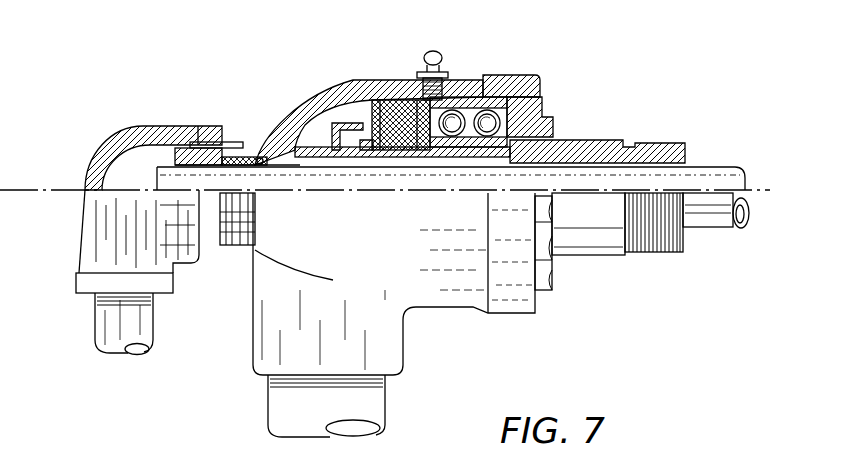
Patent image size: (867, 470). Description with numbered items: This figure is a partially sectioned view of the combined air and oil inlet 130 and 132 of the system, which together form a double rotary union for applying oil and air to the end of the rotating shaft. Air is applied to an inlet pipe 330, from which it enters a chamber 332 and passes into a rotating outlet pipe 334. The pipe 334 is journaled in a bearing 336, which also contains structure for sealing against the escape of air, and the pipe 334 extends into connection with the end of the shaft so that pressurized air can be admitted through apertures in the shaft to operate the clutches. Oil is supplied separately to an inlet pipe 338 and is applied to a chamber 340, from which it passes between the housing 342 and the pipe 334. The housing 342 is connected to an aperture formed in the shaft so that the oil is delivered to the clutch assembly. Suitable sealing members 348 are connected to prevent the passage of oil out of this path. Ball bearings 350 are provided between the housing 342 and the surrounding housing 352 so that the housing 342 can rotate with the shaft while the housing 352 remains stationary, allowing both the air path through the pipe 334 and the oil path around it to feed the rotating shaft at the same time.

The combined air and oil inlet 130 is at (146, 122).
The combined air and oil inlet 132 is at (533, 73).
The inlet pipe 330 is at (118, 333).
The chamber 332 is at (121, 172).
The rotating outlet pipe 334 is at (232, 185).
The bearing 336 is at (201, 156).
The inlet pipe 338 is at (298, 408).
The chamber 340 is at (294, 120).
The housing 342 is at (591, 147).
The sealing members 348 is at (386, 130).
The ball bearings 350 is at (468, 104).
The housing 352 is at (291, 115).